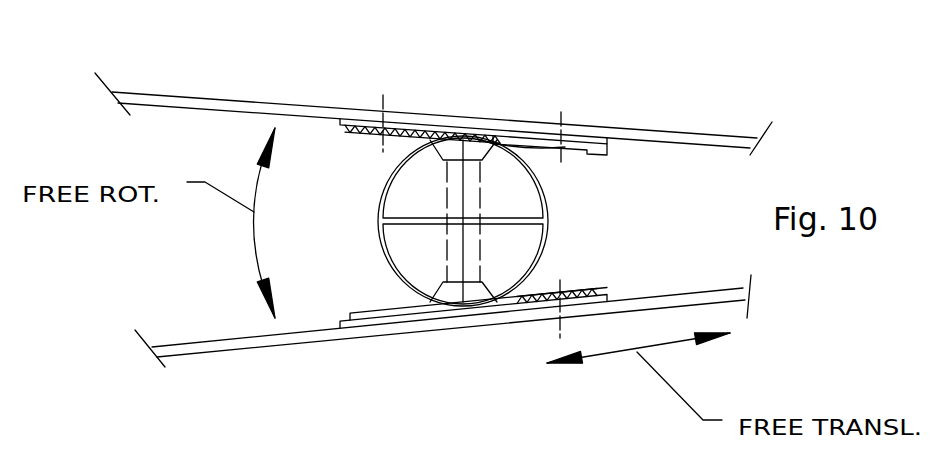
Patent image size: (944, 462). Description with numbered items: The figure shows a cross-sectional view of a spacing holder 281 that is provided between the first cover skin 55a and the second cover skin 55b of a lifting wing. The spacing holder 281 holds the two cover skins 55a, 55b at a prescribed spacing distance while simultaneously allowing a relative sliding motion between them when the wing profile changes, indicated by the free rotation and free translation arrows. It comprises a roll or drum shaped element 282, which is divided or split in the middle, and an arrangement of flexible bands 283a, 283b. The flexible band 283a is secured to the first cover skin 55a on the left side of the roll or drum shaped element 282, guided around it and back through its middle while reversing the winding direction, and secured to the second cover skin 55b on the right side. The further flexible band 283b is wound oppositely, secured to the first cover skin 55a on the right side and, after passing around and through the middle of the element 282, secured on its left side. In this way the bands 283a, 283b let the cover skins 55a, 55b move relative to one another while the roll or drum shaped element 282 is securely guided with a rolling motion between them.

The first cover skin 55a is at (635, 128).
The second cover skin 55b is at (237, 345).
The spacing holder 281 is at (522, 221).
The roll or drum shaped element 282 is at (500, 142).
The flexible band 283a is at (368, 133).
The further flexible band 283b is at (586, 148).